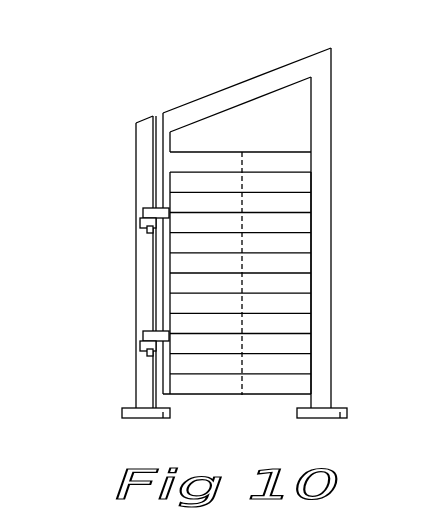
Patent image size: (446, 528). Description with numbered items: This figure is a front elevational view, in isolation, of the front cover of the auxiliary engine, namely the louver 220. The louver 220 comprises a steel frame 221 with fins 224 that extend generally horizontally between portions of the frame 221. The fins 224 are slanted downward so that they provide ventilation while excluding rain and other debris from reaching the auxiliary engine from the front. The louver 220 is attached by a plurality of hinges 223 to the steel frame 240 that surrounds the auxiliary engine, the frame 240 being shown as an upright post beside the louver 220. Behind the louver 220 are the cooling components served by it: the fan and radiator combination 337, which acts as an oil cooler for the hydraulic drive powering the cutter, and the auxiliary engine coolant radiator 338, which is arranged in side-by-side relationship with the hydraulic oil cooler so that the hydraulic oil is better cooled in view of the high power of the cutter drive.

The louver 220 is at (187, 60).
The steel frame 221 is at (320, 110).
The hinges 223 is at (143, 215).
The fins 224 is at (263, 267).
The steel frame 240 is at (147, 137).
The fan and radiator combination 337 is at (190, 283).
The auxiliary engine coolant radiator 338 is at (270, 325).